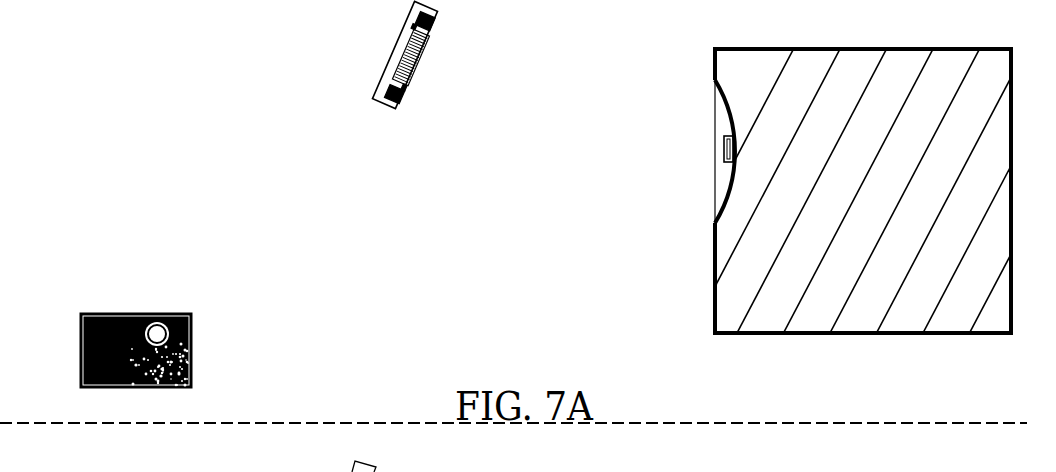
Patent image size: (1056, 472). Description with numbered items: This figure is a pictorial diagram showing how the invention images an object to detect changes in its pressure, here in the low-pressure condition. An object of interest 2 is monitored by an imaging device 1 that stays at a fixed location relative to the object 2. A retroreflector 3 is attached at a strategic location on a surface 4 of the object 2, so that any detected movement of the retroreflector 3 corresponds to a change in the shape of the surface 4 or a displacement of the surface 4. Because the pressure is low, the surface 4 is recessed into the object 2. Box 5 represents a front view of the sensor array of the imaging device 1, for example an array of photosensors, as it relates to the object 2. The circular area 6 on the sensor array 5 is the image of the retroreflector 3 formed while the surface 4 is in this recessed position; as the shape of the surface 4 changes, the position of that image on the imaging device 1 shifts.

The imaging device 1 is at (378, 45).
The object of interest 2 is at (714, 290).
The retroreflector 3 is at (726, 152).
The surface 4 is at (722, 107).
The sensor array 5 is at (104, 325).
The circular area 6 is at (169, 342).